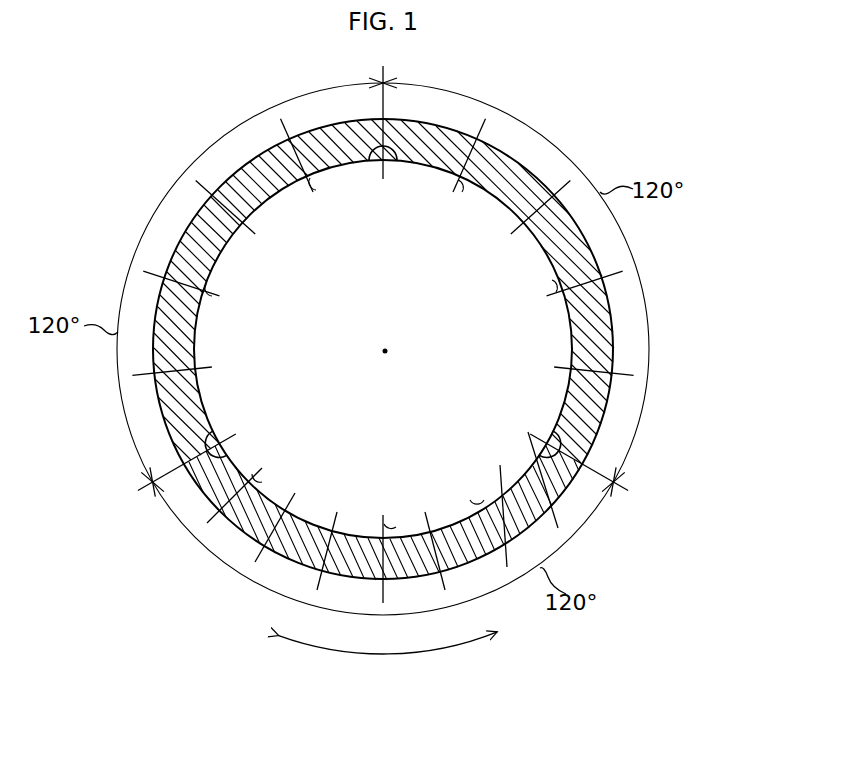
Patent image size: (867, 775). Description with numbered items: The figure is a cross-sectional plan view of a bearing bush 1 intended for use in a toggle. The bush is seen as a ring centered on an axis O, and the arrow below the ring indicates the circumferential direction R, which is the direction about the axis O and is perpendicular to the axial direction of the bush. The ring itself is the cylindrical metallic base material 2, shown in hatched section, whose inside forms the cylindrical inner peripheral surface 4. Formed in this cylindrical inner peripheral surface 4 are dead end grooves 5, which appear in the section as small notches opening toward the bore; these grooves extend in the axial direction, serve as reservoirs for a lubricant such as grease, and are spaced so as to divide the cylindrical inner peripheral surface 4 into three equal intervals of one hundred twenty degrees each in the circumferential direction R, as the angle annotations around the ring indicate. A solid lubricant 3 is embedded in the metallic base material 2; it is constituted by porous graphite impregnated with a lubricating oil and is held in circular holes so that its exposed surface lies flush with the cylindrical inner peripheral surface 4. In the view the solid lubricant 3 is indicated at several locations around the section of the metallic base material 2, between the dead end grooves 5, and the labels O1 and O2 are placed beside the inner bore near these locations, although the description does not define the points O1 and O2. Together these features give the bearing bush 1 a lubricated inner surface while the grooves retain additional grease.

The bearing bush 1 is at (180, 138).
The metallic base material 2 is at (512, 160).
The solid lubricant 3 is at (313, 183).
The cylindrical inner peripheral surface 4 is at (600, 303).
The dead end groove 5 is at (393, 149).
The axis O is at (388, 351).
The center of curvature of segment O1 is at (257, 479).
The center of curvature of segment O2 is at (318, 190).
The circumferential direction R is at (391, 654).